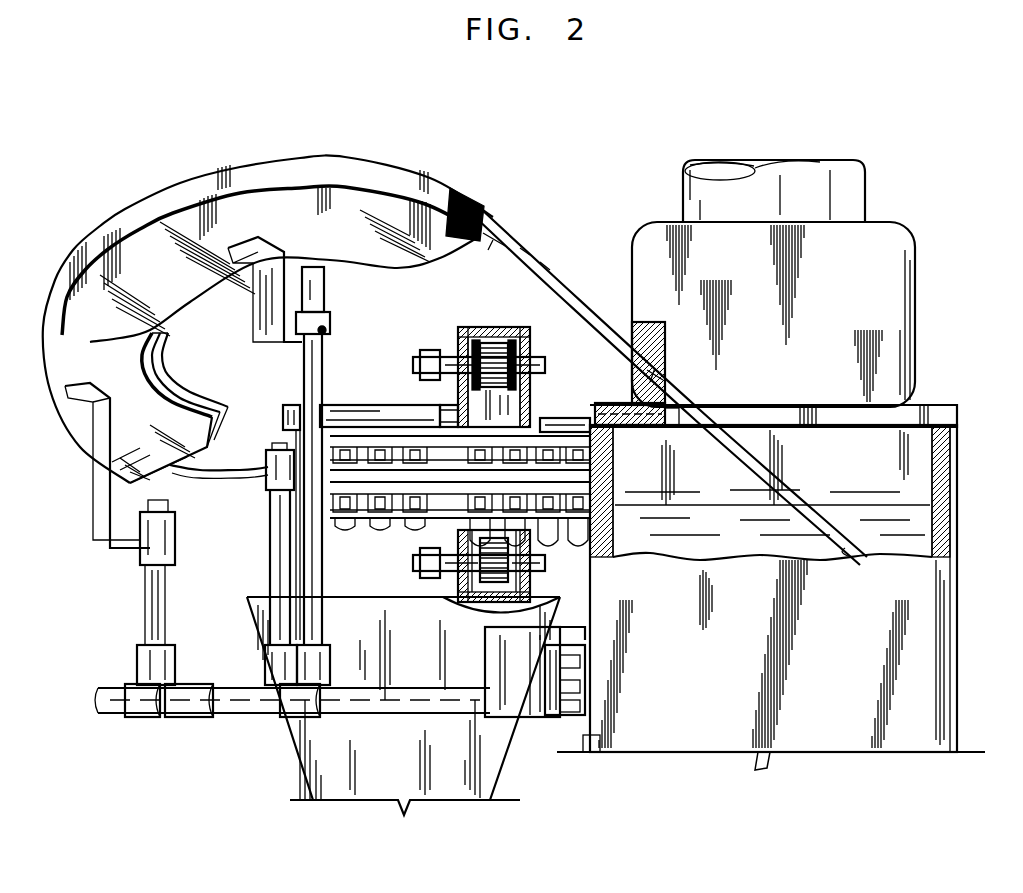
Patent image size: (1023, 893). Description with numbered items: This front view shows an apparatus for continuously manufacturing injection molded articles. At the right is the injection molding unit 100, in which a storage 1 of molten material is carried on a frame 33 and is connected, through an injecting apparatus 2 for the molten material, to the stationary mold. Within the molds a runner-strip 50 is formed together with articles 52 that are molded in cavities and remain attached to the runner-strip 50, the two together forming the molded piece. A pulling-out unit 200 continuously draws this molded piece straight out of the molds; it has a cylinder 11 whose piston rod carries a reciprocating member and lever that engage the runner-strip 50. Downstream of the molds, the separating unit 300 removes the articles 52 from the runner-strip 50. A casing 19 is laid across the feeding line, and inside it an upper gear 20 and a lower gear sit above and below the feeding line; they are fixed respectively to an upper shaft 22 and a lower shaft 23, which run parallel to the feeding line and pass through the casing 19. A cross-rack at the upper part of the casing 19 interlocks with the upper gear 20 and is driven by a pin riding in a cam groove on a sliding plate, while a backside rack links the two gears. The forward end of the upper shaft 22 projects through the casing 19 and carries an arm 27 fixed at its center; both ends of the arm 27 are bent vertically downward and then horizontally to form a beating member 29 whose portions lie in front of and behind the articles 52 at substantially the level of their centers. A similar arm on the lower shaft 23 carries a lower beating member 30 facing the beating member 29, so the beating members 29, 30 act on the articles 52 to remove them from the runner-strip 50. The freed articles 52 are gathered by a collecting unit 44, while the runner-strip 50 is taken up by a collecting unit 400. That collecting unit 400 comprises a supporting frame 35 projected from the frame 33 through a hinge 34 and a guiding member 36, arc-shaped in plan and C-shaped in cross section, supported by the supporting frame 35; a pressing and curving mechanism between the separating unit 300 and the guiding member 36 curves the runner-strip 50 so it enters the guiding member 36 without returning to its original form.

The collecting unit 400 is at (261, 300).
The guiding member 36 is at (95, 243).
The runner-strip 50 is at (556, 275).
The injection molding unit 100 is at (790, 465).
The injecting apparatus 2 is at (876, 355).
The storage 1 is at (896, 473).
The casing 19 is at (478, 330).
The upper gear 20 is at (505, 332).
The upper shaft 22 is at (446, 354).
The separating unit 300 is at (352, 405).
The arm 27 is at (433, 390).
The pulling-out unit 200 is at (548, 404).
The beating member 29 is at (322, 405).
The cylinder 11 is at (283, 420).
The beating member 30 is at (353, 505).
The lower shaft 23 is at (420, 567).
The articles 52 is at (550, 520).
The supporting frame 35 is at (431, 688).
The hinge 34 is at (560, 716).
The frame 33 is at (590, 752).
The collecting unit 44 is at (312, 750).